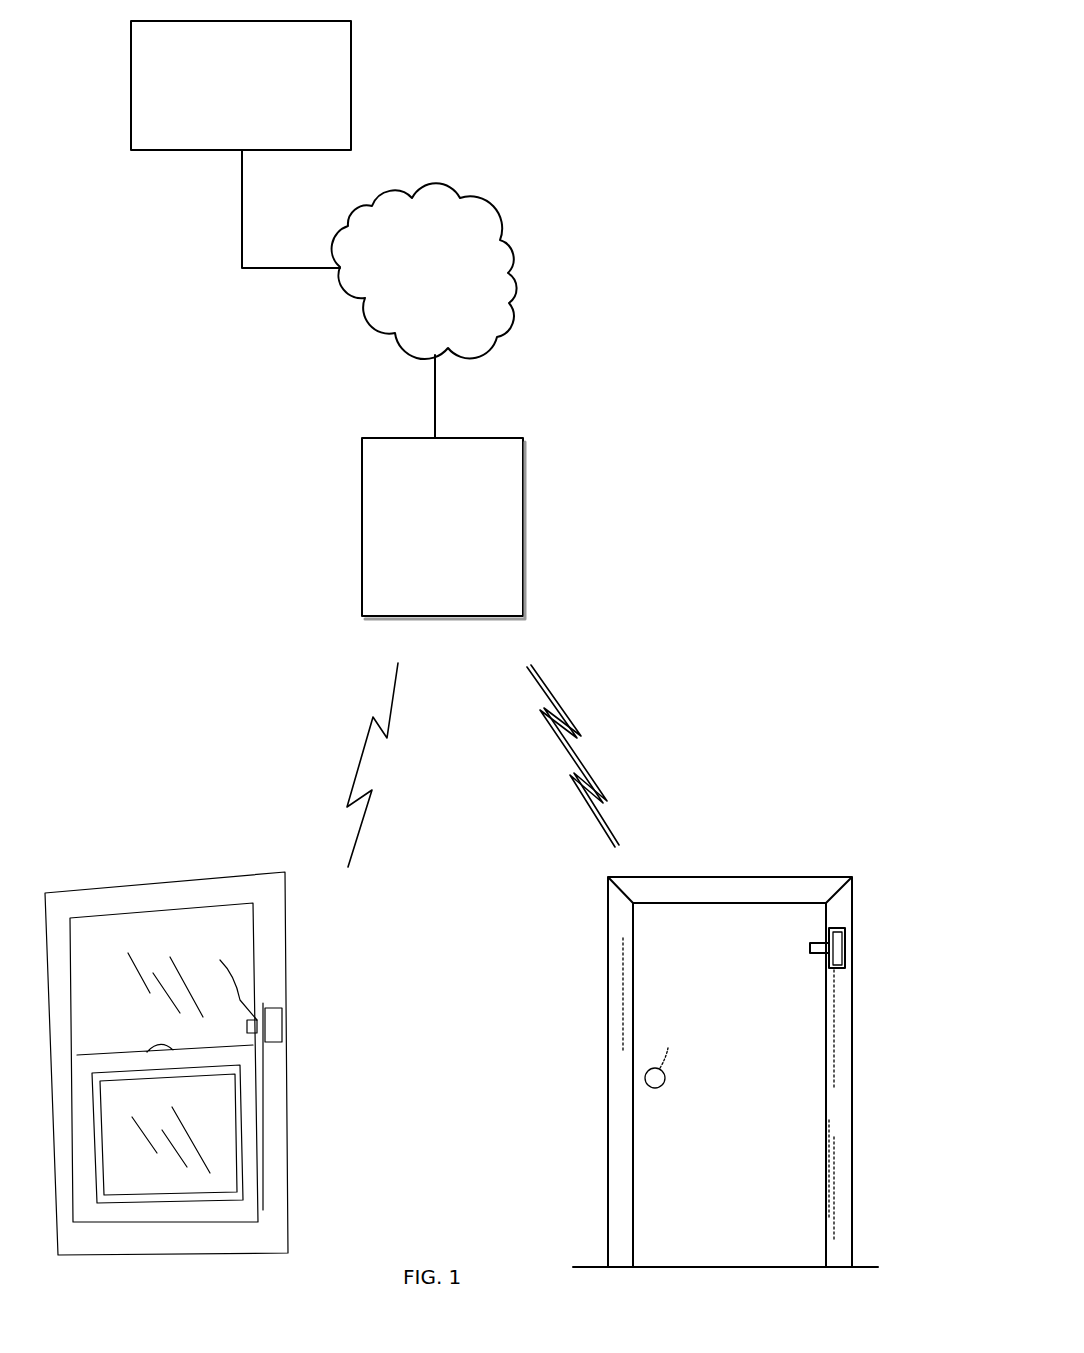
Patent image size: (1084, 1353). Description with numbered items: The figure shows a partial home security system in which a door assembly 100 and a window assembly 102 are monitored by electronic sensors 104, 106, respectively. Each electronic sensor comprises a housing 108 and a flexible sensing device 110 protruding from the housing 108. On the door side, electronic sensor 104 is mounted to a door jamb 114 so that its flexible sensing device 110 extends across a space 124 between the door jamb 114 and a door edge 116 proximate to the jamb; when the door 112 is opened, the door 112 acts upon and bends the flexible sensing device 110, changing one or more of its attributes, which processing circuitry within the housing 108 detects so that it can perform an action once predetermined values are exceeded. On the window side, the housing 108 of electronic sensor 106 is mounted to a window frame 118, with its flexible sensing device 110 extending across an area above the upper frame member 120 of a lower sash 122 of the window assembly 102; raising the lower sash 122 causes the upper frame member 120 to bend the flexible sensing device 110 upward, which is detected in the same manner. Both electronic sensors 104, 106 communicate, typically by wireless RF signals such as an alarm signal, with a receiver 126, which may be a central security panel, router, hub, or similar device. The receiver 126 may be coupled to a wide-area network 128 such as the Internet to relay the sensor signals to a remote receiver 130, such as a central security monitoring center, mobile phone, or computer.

The door assembly 100 is at (830, 847).
The window assembly 102 is at (192, 848).
The electronic sensor 104 is at (855, 938).
The electronic sensor 106 is at (280, 1053).
The housing 108 is at (838, 957).
The flexible sensing device 110 is at (813, 950).
The door 112 is at (742, 1175).
The door jamb 114 is at (605, 1027).
The door edge 116 is at (811, 922).
The window frame 118 is at (277, 1185).
The upper frame member 120 is at (127, 1057).
The lower sash 122 is at (272, 1141).
The space 124 is at (826, 1053).
The receiver 126 is at (360, 529).
The wide-area network 128 is at (451, 282).
The remote receiver 130 is at (256, 99).